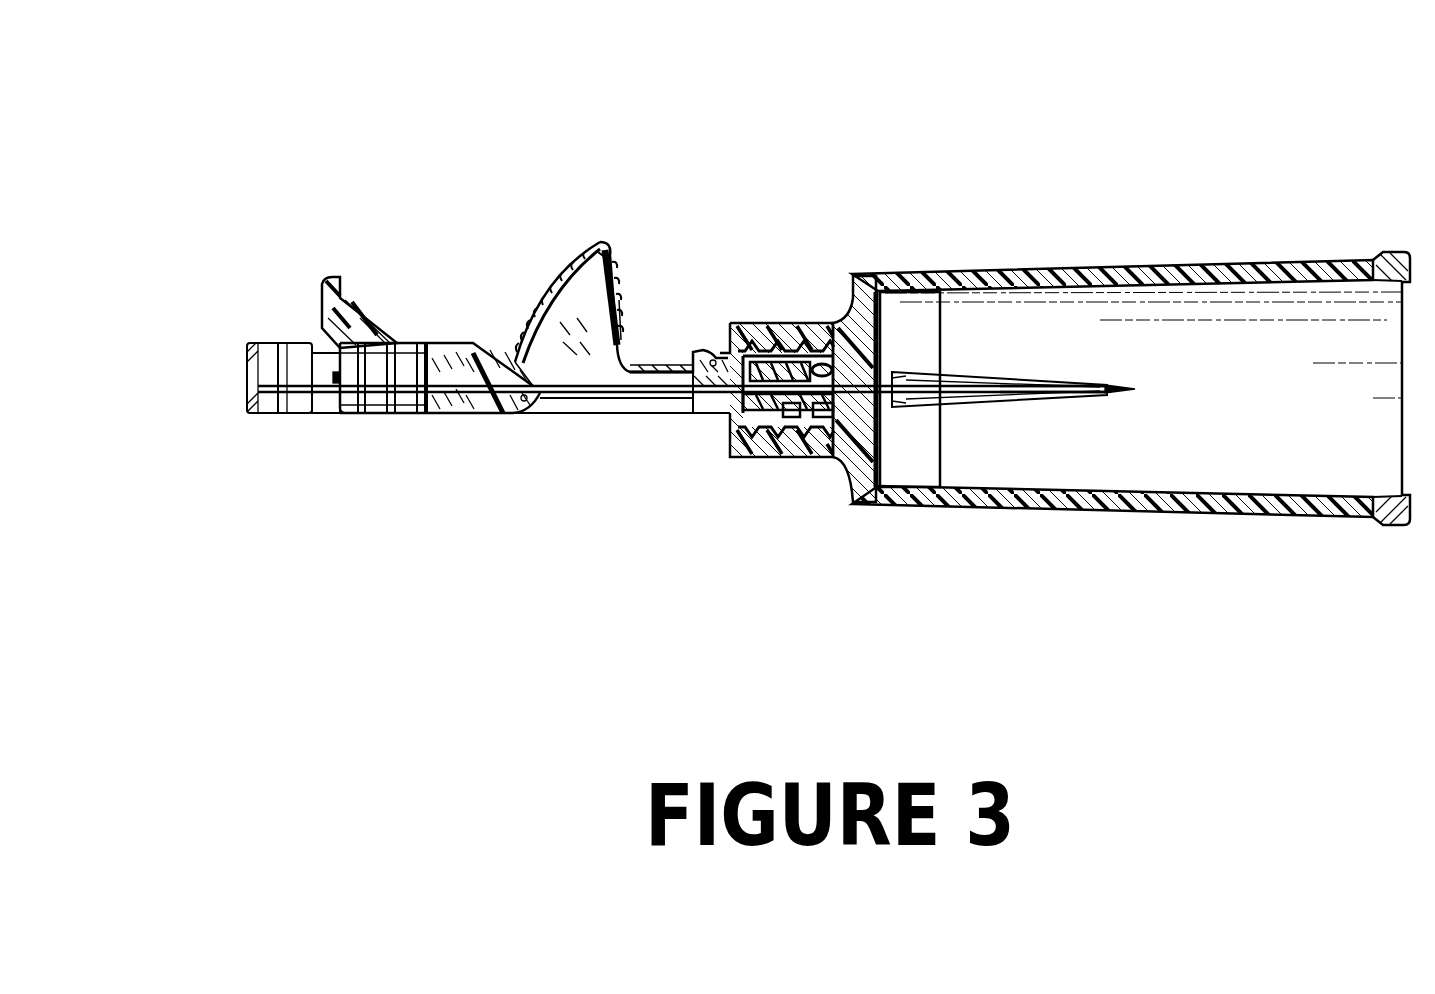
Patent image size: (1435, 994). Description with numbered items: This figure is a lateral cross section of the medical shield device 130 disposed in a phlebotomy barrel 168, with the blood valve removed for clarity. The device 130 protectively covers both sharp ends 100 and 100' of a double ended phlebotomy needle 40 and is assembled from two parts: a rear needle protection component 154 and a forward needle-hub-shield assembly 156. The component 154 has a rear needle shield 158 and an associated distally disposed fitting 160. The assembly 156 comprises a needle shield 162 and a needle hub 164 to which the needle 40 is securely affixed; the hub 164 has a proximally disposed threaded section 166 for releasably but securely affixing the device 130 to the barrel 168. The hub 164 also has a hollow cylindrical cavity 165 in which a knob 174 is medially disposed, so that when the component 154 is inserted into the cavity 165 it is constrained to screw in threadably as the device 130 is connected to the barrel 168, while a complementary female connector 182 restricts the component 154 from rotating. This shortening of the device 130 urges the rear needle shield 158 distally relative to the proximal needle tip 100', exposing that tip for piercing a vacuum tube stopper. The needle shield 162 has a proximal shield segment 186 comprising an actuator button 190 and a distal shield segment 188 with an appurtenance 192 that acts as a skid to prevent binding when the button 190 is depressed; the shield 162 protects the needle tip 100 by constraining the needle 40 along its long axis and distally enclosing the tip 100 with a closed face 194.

The double ended phlebotomy needle 40 is at (520, 415).
The sharp end 100 is at (664, 487).
The proximal needle tip 100' is at (1116, 349).
The device 130 is at (661, 329).
The rear needle protection component 154 is at (999, 404).
The forward needle-hub-shield assembly 156 is at (535, 286).
The rear needle shield 158 is at (970, 383).
The fitting 160 is at (830, 457).
The needle shield 162 is at (616, 247).
The needle hub 164 is at (750, 457).
The hollow cylindrical cavity 165 is at (913, 280).
The threaded section 166 is at (748, 324).
The phlebotomy barrel 168 is at (1084, 267).
The knob 174 is at (867, 280).
The female connector 182 is at (895, 293).
The proximal shield segment 186 is at (590, 415).
The distal shield segment 188 is at (410, 343).
The actuator button 190 is at (662, 320).
The appurtenance 192 is at (322, 290).
The closed face 194 is at (247, 397).